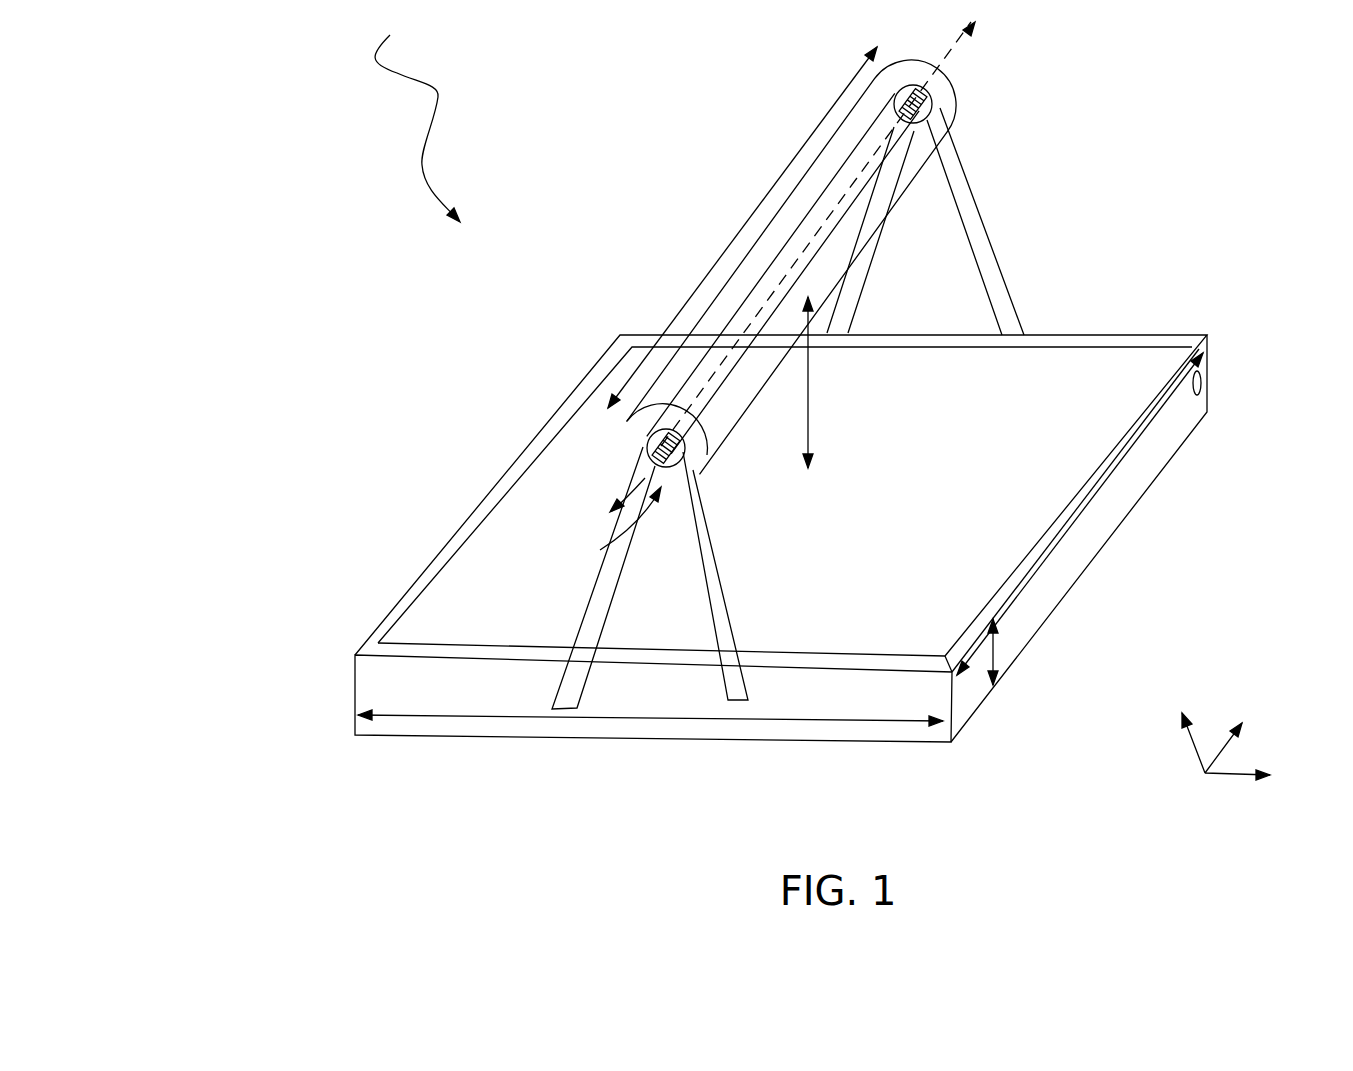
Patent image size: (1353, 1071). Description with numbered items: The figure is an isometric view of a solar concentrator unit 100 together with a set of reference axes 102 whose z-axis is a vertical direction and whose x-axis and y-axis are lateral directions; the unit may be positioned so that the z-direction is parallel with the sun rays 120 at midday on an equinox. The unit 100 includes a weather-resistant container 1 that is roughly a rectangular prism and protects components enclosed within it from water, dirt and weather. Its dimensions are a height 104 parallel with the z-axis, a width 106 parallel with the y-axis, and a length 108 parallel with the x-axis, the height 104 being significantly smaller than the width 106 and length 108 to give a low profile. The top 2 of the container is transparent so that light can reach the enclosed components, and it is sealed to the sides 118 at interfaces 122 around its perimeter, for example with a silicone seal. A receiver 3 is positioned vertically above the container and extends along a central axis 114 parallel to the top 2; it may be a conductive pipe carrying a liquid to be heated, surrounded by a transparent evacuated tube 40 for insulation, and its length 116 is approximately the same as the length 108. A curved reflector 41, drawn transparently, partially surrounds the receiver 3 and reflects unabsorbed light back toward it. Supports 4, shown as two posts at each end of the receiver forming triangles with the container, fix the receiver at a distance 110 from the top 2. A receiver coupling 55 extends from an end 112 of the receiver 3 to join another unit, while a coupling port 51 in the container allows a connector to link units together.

The solar concentrator unit 100 is at (251, 138).
The sun rays 120 is at (396, 75).
The sides 118 is at (387, 683).
The interfaces 122 is at (392, 608).
The top 2 is at (873, 513).
The length 108 is at (1100, 490).
The coupling port 51 is at (1212, 352).
The width 106 is at (488, 722).
The height 104 is at (993, 660).
The container 1 is at (555, 358).
The evacuated tube 40 is at (820, 195).
The receiver 3 is at (807, 238).
The central axis 114 is at (951, 42).
The length of the receiver 116 is at (845, 93).
The curved reflector 41 is at (953, 117).
The receiver coupling 55 is at (646, 459).
The supports 4 is at (726, 592).
The distance 110 is at (808, 366).
The end of the receiver 112 is at (602, 547).
The reference axes 102 is at (1252, 702).